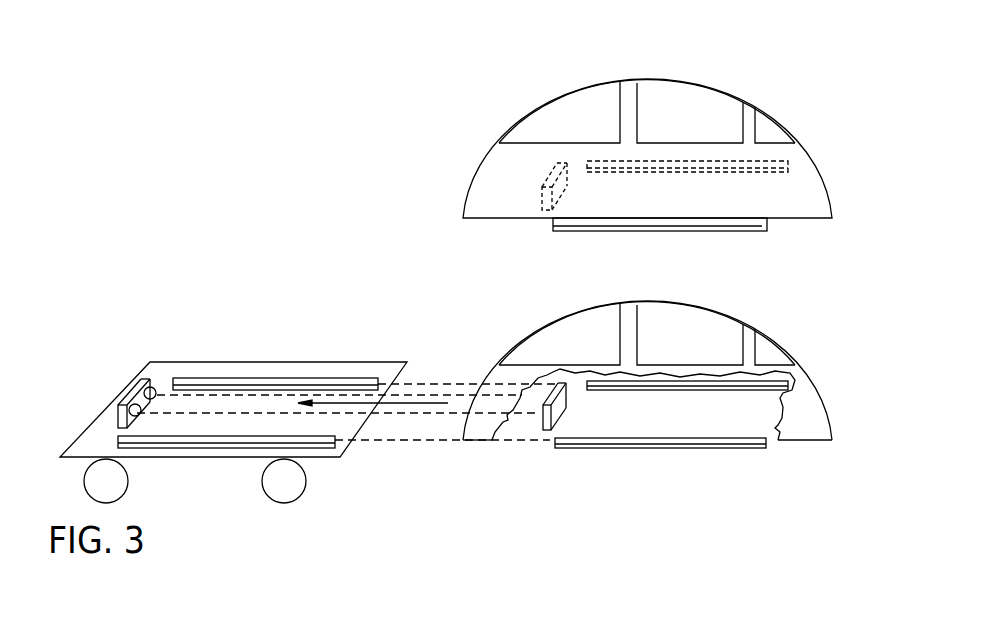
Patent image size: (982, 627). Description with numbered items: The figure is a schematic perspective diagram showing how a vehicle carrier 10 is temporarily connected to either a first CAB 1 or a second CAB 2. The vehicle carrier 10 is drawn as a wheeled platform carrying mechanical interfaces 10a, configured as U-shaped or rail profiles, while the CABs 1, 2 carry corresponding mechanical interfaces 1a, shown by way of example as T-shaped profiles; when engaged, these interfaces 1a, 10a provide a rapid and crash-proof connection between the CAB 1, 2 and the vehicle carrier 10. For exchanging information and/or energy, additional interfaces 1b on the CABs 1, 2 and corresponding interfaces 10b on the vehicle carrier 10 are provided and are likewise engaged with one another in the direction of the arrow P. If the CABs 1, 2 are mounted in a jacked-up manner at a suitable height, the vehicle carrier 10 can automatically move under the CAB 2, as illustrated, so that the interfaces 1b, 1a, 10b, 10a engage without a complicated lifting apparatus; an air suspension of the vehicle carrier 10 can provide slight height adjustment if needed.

The first CAB 1 is at (732, 75).
The mechanical interfaces of the CABs 1a is at (757, 223).
The additional interfaces of the CABs 1b is at (546, 172).
The second CAB 2 is at (780, 322).
The vehicle carrier 10 is at (100, 398).
The mechanical interfaces of the vehicle carrier 10a is at (260, 440).
The additional interfaces of the vehicle carrier 10b is at (135, 410).
The arrow P is at (423, 403).